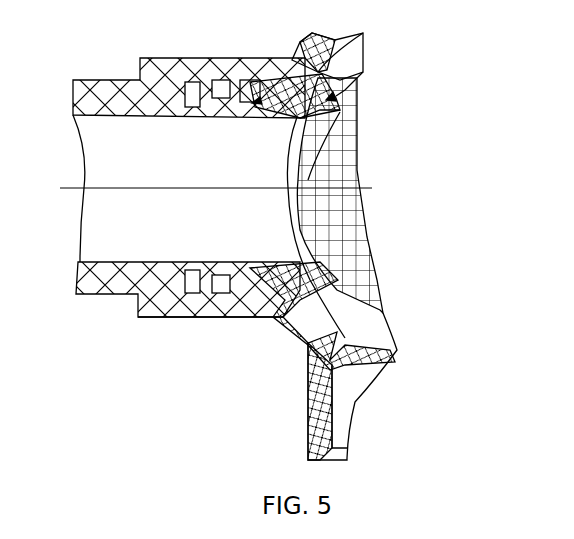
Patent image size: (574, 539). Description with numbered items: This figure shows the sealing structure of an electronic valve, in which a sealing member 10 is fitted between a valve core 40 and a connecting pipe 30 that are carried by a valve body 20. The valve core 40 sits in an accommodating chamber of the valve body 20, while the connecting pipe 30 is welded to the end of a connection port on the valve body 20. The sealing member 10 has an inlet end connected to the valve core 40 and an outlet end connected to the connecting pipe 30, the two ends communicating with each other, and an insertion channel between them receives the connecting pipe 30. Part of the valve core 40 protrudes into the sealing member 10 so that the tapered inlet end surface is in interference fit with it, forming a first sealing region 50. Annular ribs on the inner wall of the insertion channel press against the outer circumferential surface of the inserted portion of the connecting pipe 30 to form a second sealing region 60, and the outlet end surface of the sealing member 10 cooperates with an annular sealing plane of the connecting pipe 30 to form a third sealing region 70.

The sealing member 10 is at (310, 260).
The valve body 20 is at (225, 317).
The connecting pipe 30 is at (138, 80).
The valve core 40 is at (373, 290).
The first sealing region 50 is at (340, 100).
The second sealing region 60 is at (328, 43).
The third sealing region 70 is at (258, 82).